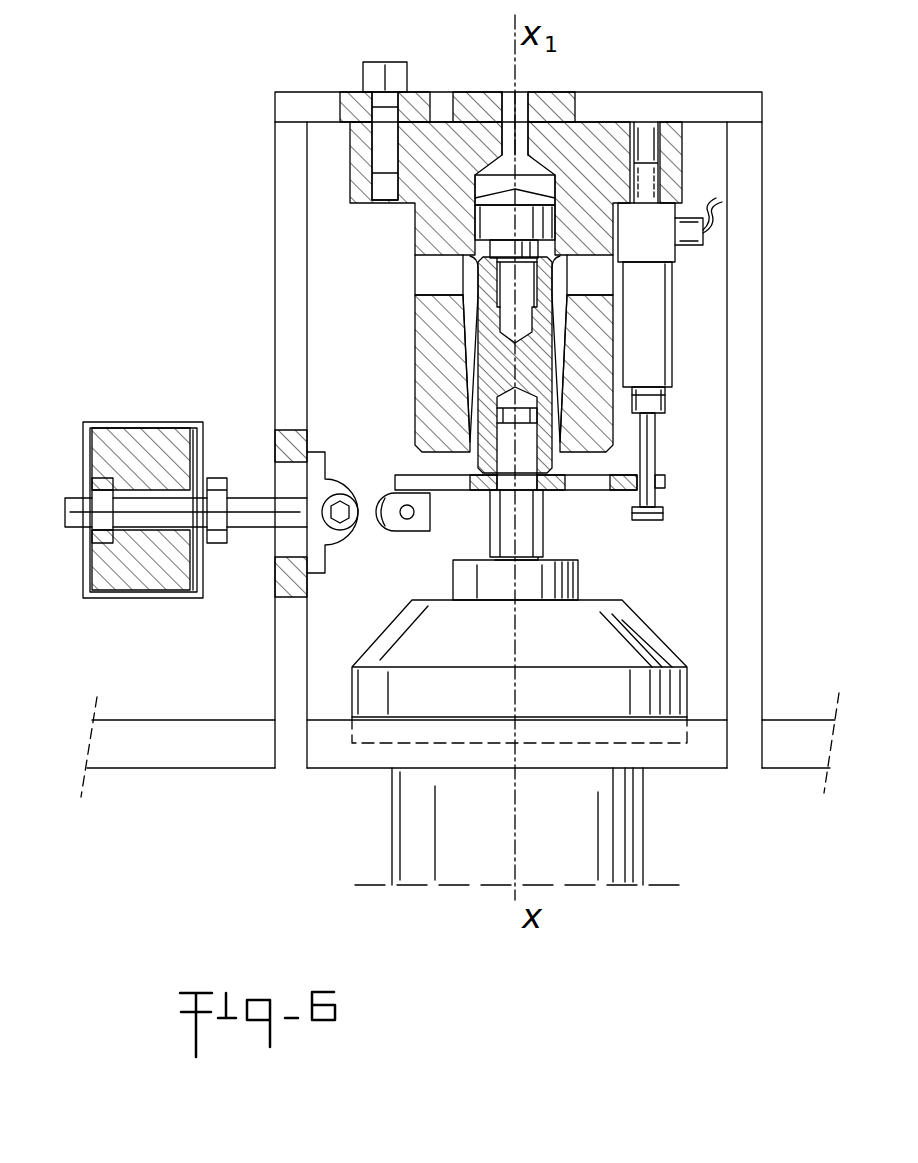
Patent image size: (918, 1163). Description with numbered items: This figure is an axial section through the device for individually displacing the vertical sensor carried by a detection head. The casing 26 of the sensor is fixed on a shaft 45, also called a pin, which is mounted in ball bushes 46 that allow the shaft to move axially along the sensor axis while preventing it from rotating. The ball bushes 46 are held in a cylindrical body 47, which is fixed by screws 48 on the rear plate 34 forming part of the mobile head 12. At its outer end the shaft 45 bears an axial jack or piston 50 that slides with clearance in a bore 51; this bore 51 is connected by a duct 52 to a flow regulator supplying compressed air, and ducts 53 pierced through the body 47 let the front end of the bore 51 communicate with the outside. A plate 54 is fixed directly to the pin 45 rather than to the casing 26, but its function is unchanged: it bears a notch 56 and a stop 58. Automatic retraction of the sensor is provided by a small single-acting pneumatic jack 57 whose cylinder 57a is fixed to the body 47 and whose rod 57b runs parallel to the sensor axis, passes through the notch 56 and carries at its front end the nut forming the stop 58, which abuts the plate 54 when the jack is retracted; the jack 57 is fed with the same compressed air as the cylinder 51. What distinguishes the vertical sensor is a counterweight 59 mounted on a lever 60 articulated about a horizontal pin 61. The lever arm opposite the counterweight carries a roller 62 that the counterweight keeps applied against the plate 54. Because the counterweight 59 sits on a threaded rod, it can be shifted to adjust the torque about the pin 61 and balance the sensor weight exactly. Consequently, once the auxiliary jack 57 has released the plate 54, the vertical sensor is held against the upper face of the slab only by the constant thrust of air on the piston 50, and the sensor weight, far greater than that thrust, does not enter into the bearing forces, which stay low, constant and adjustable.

The mobile head 12 is at (745, 470).
The casing 26 is at (590, 637).
The rear plate 34 is at (685, 105).
The shaft 45 is at (538, 343).
The ball bushes 46 is at (655, 405).
The cylindrical body 47 is at (593, 370).
The screws 48 is at (378, 72).
The axial jack or piston 50 is at (493, 220).
The bore 51 is at (540, 185).
The duct 52 is at (522, 108).
The ducts 53 is at (585, 283).
The plate 54 is at (587, 482).
The notch 56 is at (660, 482).
The single-acting pneumatic jack 57 is at (692, 278).
The cylinder 57a is at (650, 312).
The rod 57b is at (645, 432).
The stop 58 is at (650, 513).
The counterweight 59 is at (157, 562).
The lever 60 is at (256, 512).
The horizontal pin 61 is at (344, 522).
The roller 62 is at (395, 530).